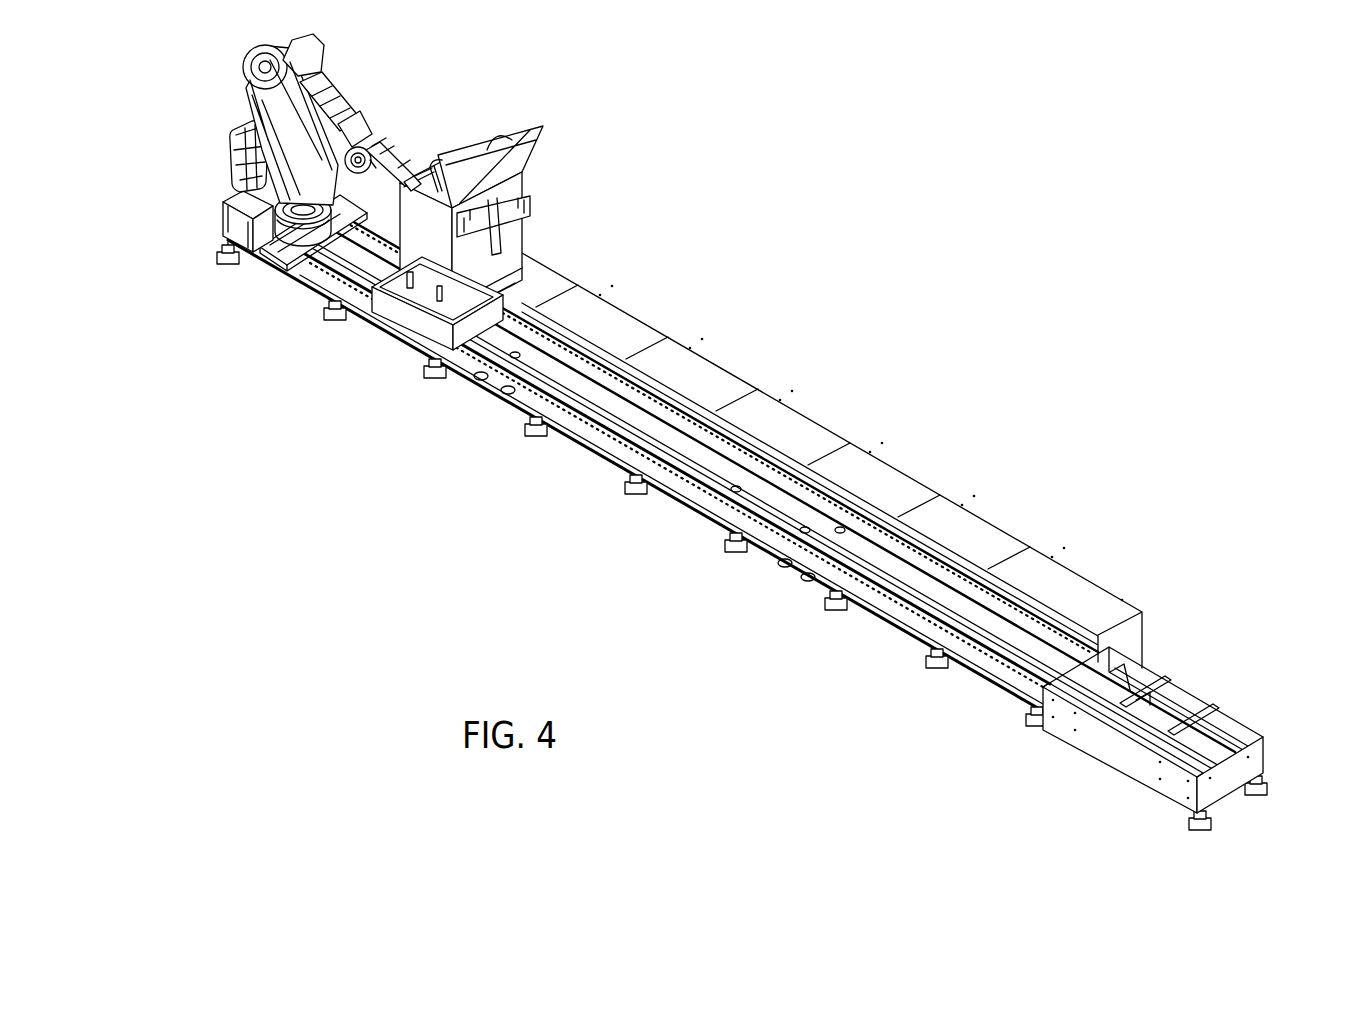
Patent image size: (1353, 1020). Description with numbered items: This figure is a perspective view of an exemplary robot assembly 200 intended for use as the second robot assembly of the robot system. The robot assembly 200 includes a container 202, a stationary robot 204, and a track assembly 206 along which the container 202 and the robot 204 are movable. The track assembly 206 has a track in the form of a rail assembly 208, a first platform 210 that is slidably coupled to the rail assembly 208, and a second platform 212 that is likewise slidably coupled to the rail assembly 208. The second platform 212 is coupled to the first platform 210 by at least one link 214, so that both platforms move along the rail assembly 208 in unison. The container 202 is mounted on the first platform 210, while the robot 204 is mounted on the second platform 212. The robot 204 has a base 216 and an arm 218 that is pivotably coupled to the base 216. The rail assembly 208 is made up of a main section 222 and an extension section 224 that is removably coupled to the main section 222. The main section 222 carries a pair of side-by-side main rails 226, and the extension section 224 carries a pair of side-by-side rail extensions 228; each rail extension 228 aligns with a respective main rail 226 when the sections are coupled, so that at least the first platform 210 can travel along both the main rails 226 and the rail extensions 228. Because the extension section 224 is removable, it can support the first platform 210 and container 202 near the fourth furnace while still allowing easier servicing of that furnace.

The robot assembly 200 is at (948, 162).
The container 202 is at (447, 256).
The robot 204 is at (243, 95).
The track assembly 206 is at (685, 513).
The rail assembly 208 is at (610, 438).
The first platform 210 is at (403, 315).
The second platform 212 is at (243, 220).
The link 214 is at (355, 255).
The base 216 is at (240, 162).
The arm 218 is at (353, 113).
The main section 222 is at (700, 398).
The extension section 224 is at (1205, 688).
The main rails 226 is at (760, 463).
The rail extensions 228 is at (1140, 683).